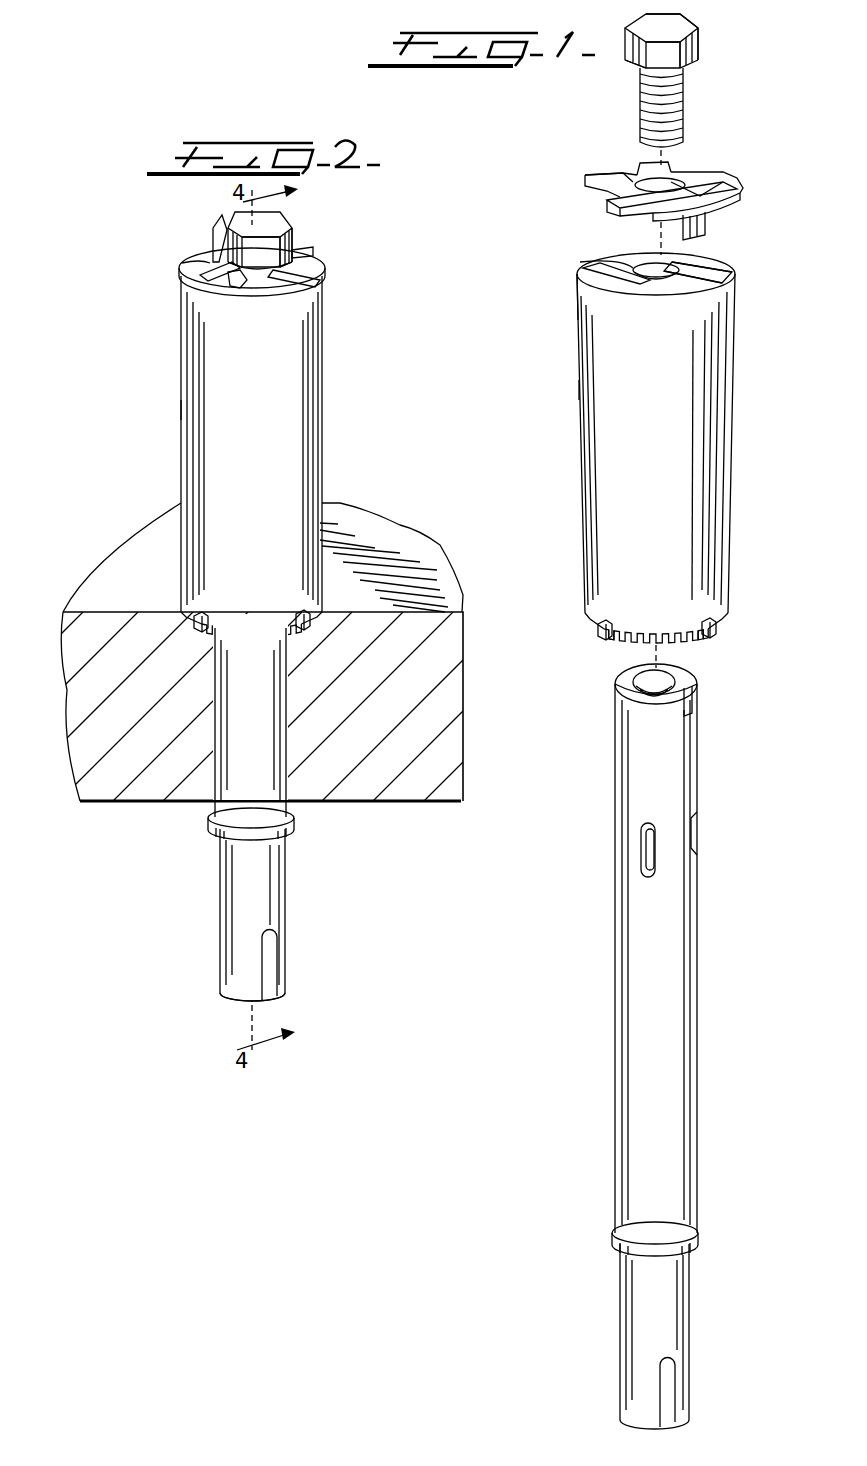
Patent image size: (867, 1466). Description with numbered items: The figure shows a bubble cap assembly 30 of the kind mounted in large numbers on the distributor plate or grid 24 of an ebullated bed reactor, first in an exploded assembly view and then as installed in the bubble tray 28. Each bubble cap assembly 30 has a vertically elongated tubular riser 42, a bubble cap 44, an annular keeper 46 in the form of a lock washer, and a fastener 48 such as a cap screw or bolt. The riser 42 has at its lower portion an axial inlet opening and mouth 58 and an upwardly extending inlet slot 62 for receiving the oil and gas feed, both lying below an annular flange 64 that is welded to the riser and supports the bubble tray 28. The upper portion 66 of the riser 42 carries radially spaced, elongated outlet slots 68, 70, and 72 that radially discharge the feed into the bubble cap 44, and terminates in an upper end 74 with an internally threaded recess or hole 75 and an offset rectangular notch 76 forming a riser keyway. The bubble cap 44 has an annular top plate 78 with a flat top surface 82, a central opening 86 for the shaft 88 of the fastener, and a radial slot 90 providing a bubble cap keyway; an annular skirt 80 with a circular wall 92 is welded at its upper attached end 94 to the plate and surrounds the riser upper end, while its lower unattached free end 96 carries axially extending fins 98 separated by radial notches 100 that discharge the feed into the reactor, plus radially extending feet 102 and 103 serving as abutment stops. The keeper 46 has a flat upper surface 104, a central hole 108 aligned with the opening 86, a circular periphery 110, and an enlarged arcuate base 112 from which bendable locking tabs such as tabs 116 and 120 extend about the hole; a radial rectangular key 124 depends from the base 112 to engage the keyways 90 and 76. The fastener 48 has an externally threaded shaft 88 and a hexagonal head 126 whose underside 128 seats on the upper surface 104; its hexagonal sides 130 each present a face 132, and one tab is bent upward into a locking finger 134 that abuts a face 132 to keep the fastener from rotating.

In FIG. 2, the distributor plate or grid 24 is at (95, 580).
In FIG. 2, the bubble tray 28 is at (75, 706).
In FIG. 1, the bubble cap assembly 30 is at (580, 389).
In FIG. 2, the bubble cap assembly 30 is at (182, 410).
In FIG. 1, the tubular riser 42 is at (616, 1061).
In FIG. 2, the tubular riser 42 is at (285, 844).
In FIG. 1, the bubble cap 44 is at (722, 352).
In FIG. 2, the bubble cap 44 is at (314, 339).
In FIG. 1, the annular keeper 46 is at (600, 197).
In FIG. 2, the annular keeper 46 is at (325, 268).
In FIG. 1, the fastener 48 is at (700, 68).
In FIG. 2, the fastener 48 is at (286, 214).
In FIG. 2, the axial inlet opening and mouth 58 is at (235, 1000).
In FIG. 1, the inlet slot 62 is at (672, 1371).
In FIG. 2, the inlet slot 62 is at (275, 943).
In FIG. 1, the annular flange 64 is at (697, 1232).
In FIG. 2, the annular flange 64 is at (208, 823).
In FIG. 1, the upper portion of the riser 66 is at (690, 933).
In FIG. 2, the upper portion of the riser 66 is at (275, 712).
In FIG. 1, the outlet slot 68 is at (650, 859).
In FIG. 1, the outlet slot 70 is at (641, 841).
In FIG. 1, the outlet slot 72 is at (697, 836).
In FIG. 1, the upper end of the riser 74 is at (615, 696).
In FIG. 1, the internally threaded recess or hole 75 is at (690, 681).
In FIG. 1, the rectangular notch 76 is at (697, 713).
In FIG. 1, the annular top plate 78 is at (585, 266).
In FIG. 2, the annular top plate 78 is at (190, 263).
In FIG. 1, the annular skirt 80 is at (590, 546).
In FIG. 2, the annular skirt 80 is at (195, 551).
In FIG. 1, the top surface 82 is at (615, 262).
In FIG. 2, the top surface 82 is at (214, 254).
In FIG. 1, the central opening 86 is at (705, 265).
In FIG. 1, the threaded shaft 88 is at (680, 112).
In FIG. 1, the radial slot 90 is at (700, 284).
In FIG. 1, the circular wall 92 is at (724, 512).
In FIG. 2, the circular wall 92 is at (320, 476).
In FIG. 1, the upper attached end 94 is at (577, 300).
In FIG. 1, the lower unattached free end 96 is at (718, 592).
In FIG. 1, the fins 98 is at (598, 627).
In FIG. 2, the fins 98 is at (276, 636).
In FIG. 1, the radial notches 100 is at (716, 626).
In FIG. 2, the radial notches 100 is at (220, 637).
In FIG. 1, the radially extending foot 102 is at (600, 640).
In FIG. 1, the radially extending foot 103 is at (716, 638).
In FIG. 1, the upper surface 104 is at (685, 182).
In FIG. 2, the upper surface 104 is at (275, 278).
In FIG. 1, the central hole 108 is at (668, 178).
In FIG. 1, the circular periphery 110 is at (742, 194).
In FIG. 1, the arcuate base 112 is at (707, 230).
In FIG. 2, the arcuate base 112 is at (305, 275).
In FIG. 1, the locking tab 116 is at (588, 176).
In FIG. 2, the locking tab 120 is at (238, 290).
In FIG. 1, the radial rectangular key 124 is at (661, 239).
In FIG. 1, the hexagonal head 126 is at (688, 30).
In FIG. 1, the underside 128 is at (630, 62).
In FIG. 2, the underside 128 is at (300, 256).
In FIG. 1, the hexagonal sides 130 is at (690, 48).
In FIG. 2, the hexagonal sides 130 is at (292, 232).
In FIG. 1, the face 132 is at (660, 58).
In FIG. 2, the face 132 is at (236, 245).
In FIG. 2, the locking finger 134 is at (218, 238).